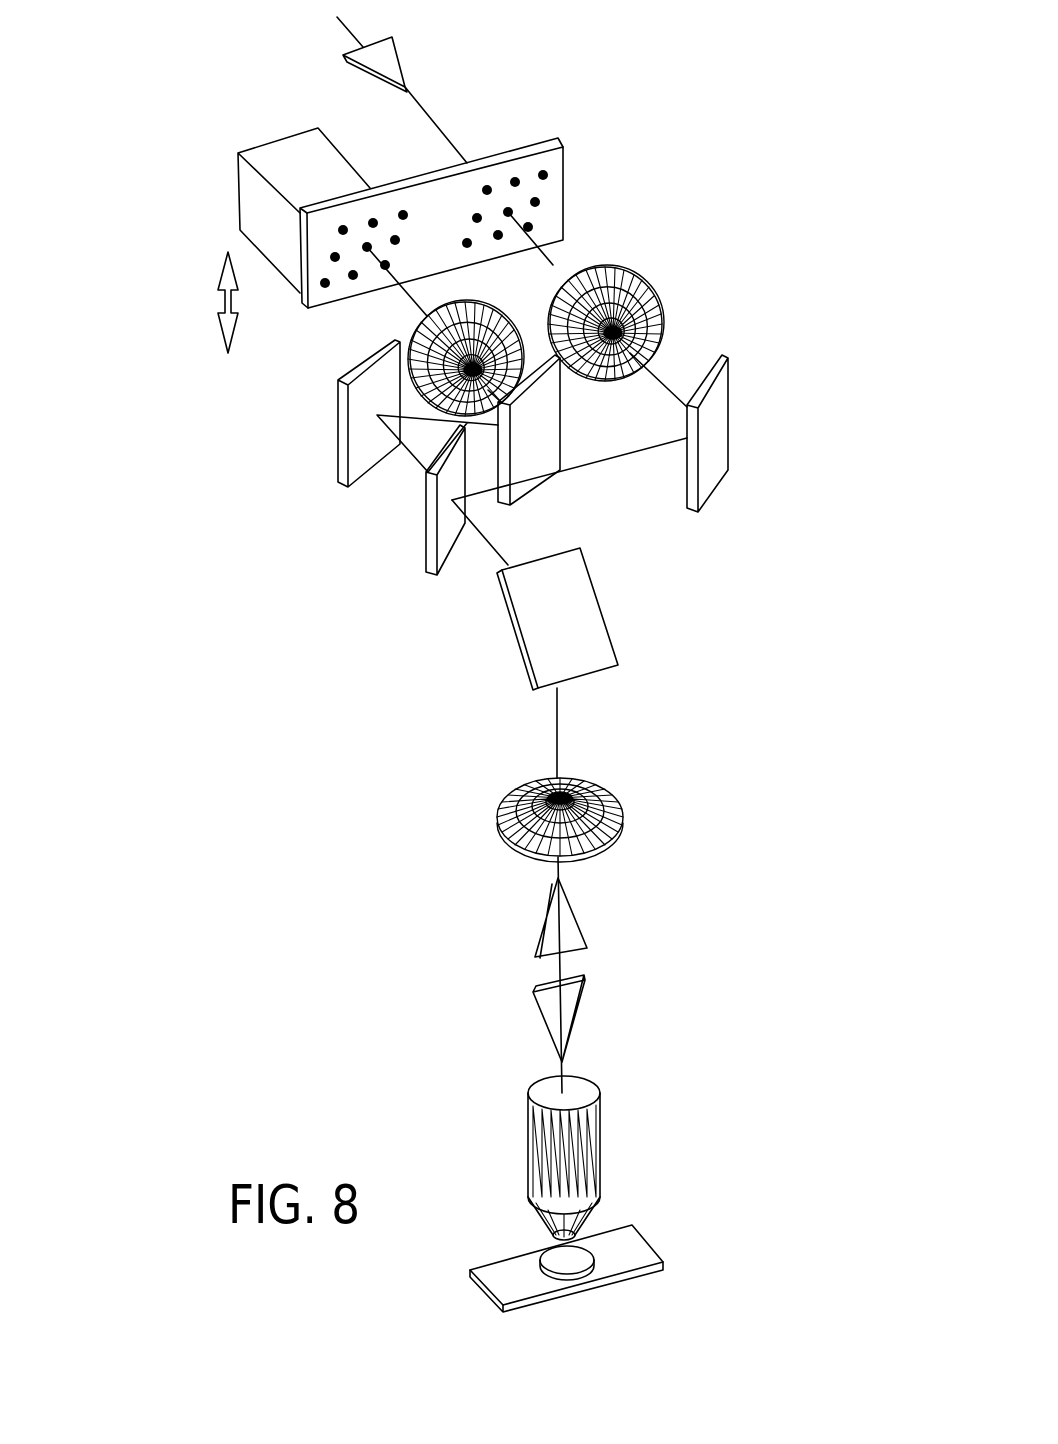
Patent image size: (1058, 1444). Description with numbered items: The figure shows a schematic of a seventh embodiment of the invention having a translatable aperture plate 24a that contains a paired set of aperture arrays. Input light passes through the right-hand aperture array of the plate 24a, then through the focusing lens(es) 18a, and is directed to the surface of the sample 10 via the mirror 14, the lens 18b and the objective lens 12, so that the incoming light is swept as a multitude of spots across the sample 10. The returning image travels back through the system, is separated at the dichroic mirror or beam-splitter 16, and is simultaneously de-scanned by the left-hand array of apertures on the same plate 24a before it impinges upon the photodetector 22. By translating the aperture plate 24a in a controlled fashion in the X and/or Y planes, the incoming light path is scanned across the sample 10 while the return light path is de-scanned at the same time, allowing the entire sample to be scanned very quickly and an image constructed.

The sample 10 is at (650, 1237).
The objective lens 12 is at (600, 1073).
The mirror 14 is at (607, 603).
The dichroic mirror or beam-splitter 16 is at (423, 577).
The focusing lens(es) 18a is at (610, 263).
The lens 18b is at (625, 793).
The photodetector 22 is at (222, 152).
The translatable aperture plate 24a is at (565, 132).